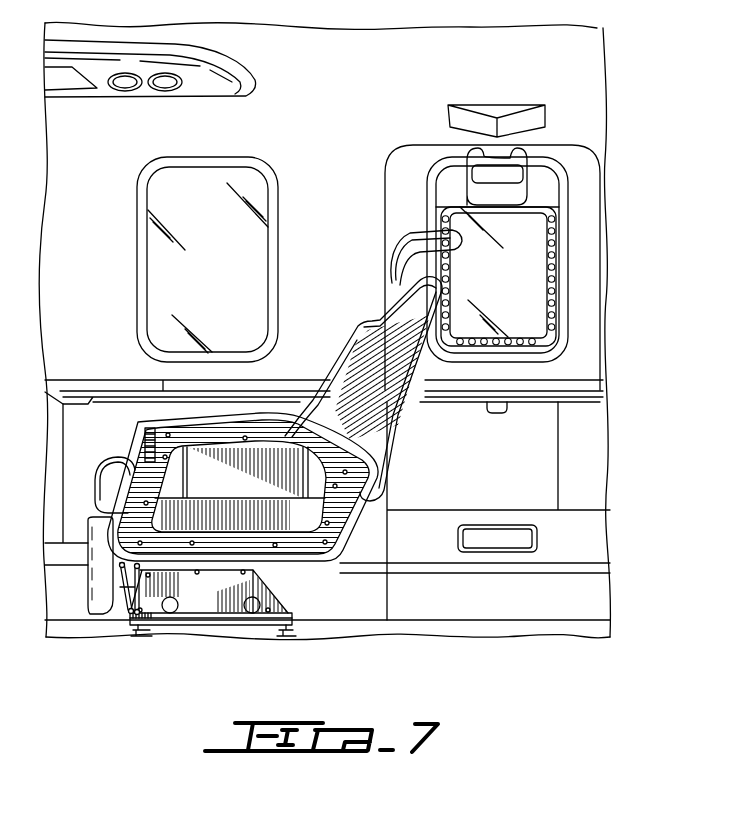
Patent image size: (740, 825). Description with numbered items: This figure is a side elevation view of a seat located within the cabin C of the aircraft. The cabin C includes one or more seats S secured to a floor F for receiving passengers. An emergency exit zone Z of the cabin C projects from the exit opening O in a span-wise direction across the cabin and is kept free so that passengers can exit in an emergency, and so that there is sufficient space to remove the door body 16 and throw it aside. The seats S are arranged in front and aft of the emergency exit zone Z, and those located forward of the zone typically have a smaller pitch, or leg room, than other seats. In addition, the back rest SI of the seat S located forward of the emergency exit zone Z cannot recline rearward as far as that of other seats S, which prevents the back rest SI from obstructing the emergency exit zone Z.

The cabin C is at (338, 212).
The seat S is at (346, 347).
The back rest SI is at (412, 427).
The door body 16 is at (601, 283).
The emergency exit zone Z is at (571, 387).
The exit opening O is at (567, 147).
The floor F is at (452, 625).